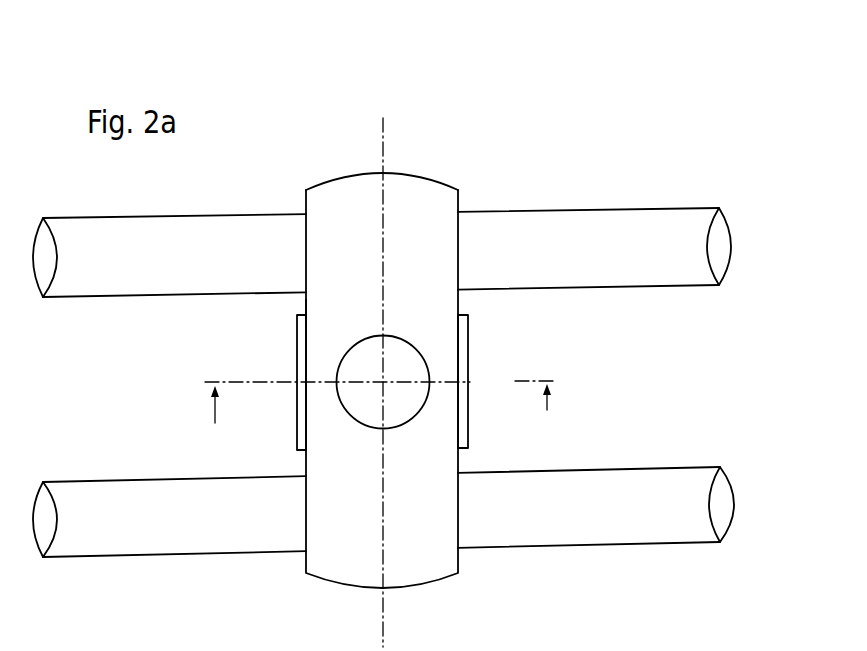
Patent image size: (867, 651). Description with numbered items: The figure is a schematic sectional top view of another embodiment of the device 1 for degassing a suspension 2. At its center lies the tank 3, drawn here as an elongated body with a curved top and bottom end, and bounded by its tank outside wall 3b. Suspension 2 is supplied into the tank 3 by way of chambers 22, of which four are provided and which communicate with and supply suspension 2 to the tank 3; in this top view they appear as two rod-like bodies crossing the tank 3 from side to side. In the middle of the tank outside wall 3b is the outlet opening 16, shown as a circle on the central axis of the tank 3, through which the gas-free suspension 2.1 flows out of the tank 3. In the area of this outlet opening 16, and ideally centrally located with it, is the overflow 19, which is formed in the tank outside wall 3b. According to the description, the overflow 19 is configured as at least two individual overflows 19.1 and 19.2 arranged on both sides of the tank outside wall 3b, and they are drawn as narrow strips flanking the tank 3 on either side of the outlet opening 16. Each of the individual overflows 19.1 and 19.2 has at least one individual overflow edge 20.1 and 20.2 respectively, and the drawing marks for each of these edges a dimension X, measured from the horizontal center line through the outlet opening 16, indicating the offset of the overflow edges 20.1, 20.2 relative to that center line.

The coupling assembly 1 is at (437, 120).
The suspension 2 is at (336, 207).
The tank 3 is at (450, 182).
The tank outside wall 3b is at (306, 308).
The chambers 22 is at (544, 235).
The overflow 19 is at (478, 333).
The individual overflow 19.1 is at (463, 363).
The individual overflow 19.2 is at (306, 377).
The gas-free suspension 2.1 is at (348, 402).
The outlet opening 16 is at (418, 418).
The individual overflow edge 20.1 is at (460, 405).
The individual overflow edge 20.2 is at (306, 405).